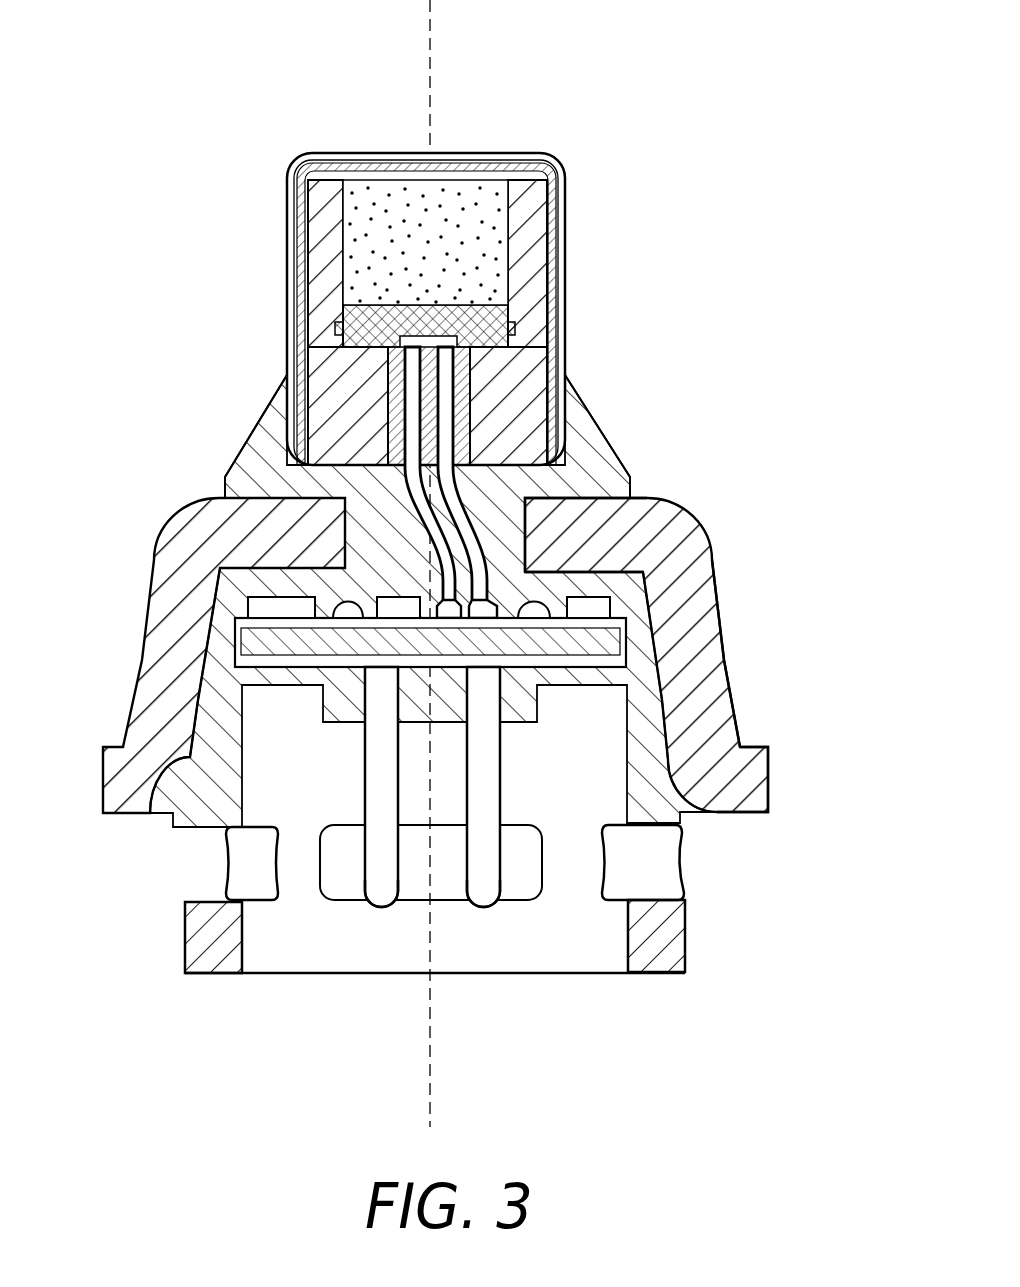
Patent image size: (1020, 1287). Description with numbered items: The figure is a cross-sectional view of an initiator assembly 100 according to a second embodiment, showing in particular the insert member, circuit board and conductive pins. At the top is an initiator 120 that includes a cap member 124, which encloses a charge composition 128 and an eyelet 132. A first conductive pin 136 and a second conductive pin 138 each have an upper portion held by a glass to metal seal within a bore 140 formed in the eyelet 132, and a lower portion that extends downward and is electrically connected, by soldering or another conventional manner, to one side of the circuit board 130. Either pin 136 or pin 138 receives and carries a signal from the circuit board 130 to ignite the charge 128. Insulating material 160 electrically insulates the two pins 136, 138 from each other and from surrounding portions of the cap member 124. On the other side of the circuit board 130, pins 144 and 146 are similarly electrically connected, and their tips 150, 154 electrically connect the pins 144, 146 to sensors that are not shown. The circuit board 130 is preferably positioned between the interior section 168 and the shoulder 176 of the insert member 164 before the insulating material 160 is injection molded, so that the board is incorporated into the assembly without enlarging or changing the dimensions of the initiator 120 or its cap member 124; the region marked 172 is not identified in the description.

The initiator assembly 100 is at (661, 249).
The initiator 120 is at (272, 240).
The cap member 124 is at (566, 213).
The charge composition 128 is at (465, 188).
The eyelet 132 is at (330, 393).
The first conductive pin 136 is at (450, 500).
The second conductive pin 138 is at (405, 472).
The bore 140 is at (447, 385).
The insulating material 160 is at (260, 467).
The insert member 164 is at (732, 600).
The interior section 168 is at (553, 537).
The housing wall 172 is at (712, 690).
The shoulder 176 is at (747, 777).
The circuit board 130 is at (263, 645).
The pin 146 is at (377, 782).
The pin 144 is at (482, 778).
The tip 154 is at (385, 897).
The tip 150 is at (485, 907).